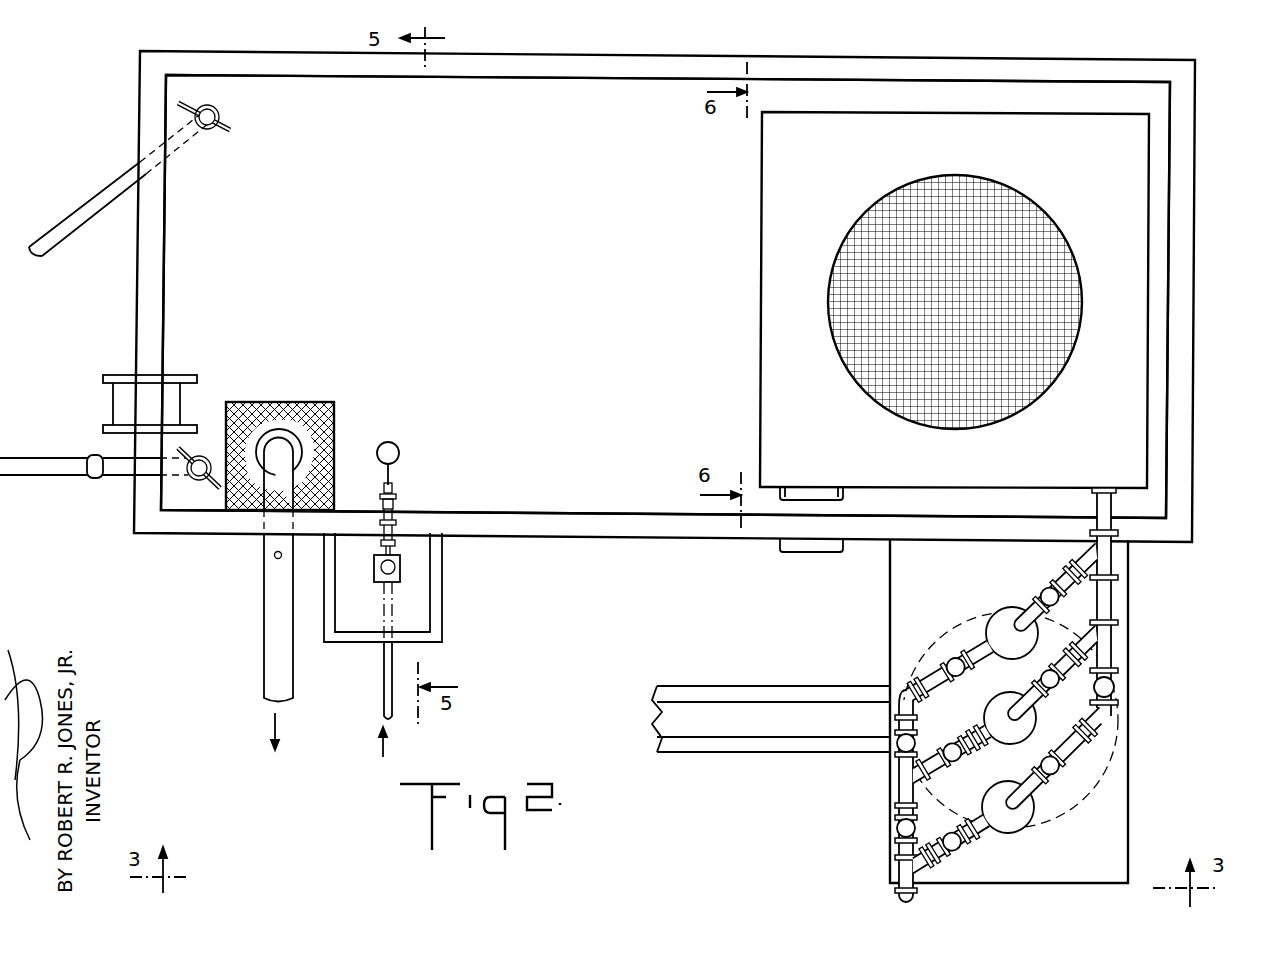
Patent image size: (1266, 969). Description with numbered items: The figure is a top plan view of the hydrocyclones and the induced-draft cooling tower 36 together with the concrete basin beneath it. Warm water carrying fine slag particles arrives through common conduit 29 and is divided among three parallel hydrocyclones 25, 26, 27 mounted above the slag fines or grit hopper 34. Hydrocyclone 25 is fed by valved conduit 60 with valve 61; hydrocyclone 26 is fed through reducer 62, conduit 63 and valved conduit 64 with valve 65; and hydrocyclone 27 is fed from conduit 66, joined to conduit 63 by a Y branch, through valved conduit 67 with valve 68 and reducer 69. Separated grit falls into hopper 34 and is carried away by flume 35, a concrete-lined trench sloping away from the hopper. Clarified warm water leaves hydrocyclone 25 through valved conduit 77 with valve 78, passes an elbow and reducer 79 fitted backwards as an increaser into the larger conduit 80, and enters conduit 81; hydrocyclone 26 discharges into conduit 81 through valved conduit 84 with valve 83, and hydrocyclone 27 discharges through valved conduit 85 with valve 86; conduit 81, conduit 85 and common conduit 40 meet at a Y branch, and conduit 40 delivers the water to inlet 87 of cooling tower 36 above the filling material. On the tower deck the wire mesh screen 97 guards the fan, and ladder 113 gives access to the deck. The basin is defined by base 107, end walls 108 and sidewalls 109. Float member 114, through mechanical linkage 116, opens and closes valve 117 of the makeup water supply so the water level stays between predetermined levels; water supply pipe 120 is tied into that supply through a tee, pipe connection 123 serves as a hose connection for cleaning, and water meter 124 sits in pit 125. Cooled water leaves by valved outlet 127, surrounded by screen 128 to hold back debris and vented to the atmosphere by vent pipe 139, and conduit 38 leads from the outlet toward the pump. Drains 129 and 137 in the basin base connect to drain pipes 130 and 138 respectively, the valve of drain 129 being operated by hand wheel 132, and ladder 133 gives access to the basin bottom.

The hydrocyclone 25 is at (1026, 820).
The hydrocyclone 26 is at (1002, 706).
The hydrocyclone 27 is at (1000, 613).
The common conduit 29 is at (897, 896).
The slag fines or grit hopper 34 is at (1120, 740).
The flume 35 is at (695, 728).
The cooling tower 36 is at (756, 308).
The conduit 38 is at (265, 605).
The common conduit 40 is at (1112, 510).
The valved conduit 60 is at (938, 864).
The valve 61 is at (962, 844).
The reducer 62 is at (895, 832).
The conduit 63 is at (895, 808).
The valved conduit 64 is at (950, 766).
The valve 65 is at (960, 748).
The conduit 66 is at (895, 756).
The valved conduit 67 is at (922, 672).
The valve 68 is at (950, 648).
The reducer 69 is at (895, 718).
The valved conduit 77 is at (1106, 764).
The valve 78 is at (1062, 786).
The reducer 79 is at (1115, 688).
The conduit 80 is at (1118, 670).
The conduit 81 is at (1114, 606).
The valve 83 is at (1058, 698).
The valved conduit 84 is at (1076, 664).
The valved conduit 85 is at (1068, 572).
The valve 86 is at (1060, 592).
The inlet 87 is at (1094, 492).
The wire mesh screen 97 is at (1022, 232).
The bottom wall or base 107 is at (648, 112).
The end walls 108 is at (136, 258).
The sidewalls 109 is at (442, 62).
The ladder 113 is at (783, 548).
The float member 114 is at (397, 447).
The mechanical linkage 116 is at (394, 474).
The valve 117 is at (398, 500).
The water supply pipe 120 is at (398, 566).
The pipe connection 123 is at (397, 526).
The water meter 124 is at (402, 578).
The pit 125 is at (422, 622).
The valved outlet 127 is at (298, 446).
The screen 128 is at (320, 402).
The drain 129 is at (200, 482).
The drain pipe 130 is at (46, 465).
The hand wheel 132 is at (238, 124).
The ladder 133 is at (115, 374).
The drain 137 is at (218, 110).
The drain pipe 138 is at (80, 205).
The vent pipe 139 is at (273, 558).